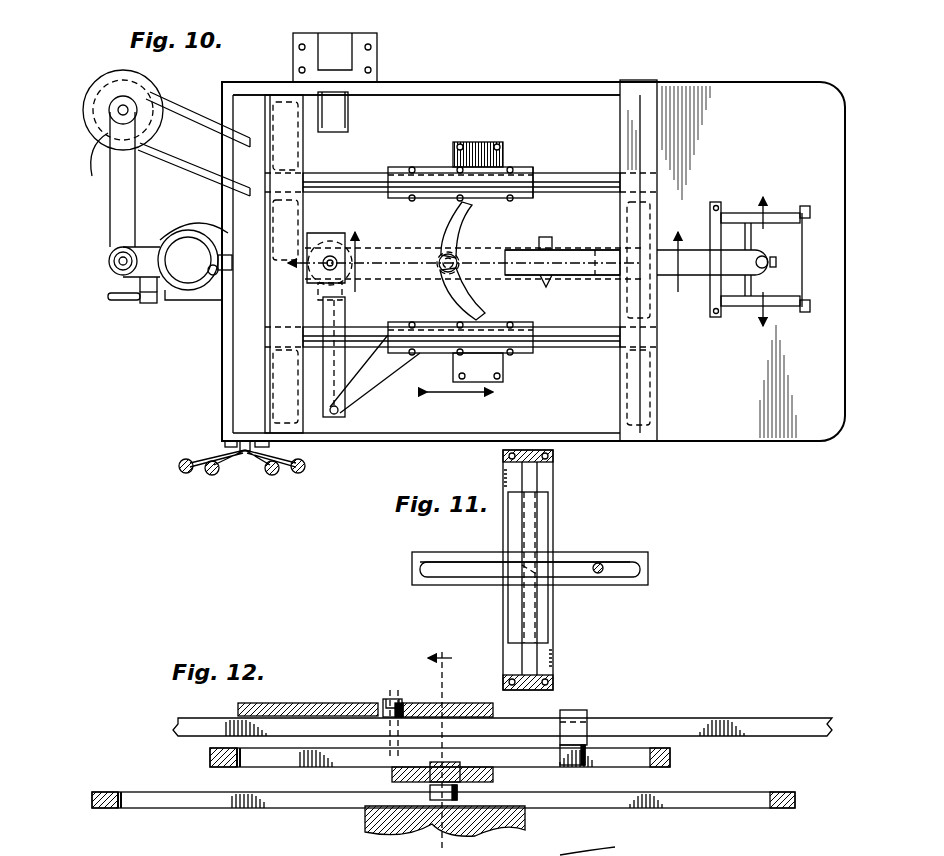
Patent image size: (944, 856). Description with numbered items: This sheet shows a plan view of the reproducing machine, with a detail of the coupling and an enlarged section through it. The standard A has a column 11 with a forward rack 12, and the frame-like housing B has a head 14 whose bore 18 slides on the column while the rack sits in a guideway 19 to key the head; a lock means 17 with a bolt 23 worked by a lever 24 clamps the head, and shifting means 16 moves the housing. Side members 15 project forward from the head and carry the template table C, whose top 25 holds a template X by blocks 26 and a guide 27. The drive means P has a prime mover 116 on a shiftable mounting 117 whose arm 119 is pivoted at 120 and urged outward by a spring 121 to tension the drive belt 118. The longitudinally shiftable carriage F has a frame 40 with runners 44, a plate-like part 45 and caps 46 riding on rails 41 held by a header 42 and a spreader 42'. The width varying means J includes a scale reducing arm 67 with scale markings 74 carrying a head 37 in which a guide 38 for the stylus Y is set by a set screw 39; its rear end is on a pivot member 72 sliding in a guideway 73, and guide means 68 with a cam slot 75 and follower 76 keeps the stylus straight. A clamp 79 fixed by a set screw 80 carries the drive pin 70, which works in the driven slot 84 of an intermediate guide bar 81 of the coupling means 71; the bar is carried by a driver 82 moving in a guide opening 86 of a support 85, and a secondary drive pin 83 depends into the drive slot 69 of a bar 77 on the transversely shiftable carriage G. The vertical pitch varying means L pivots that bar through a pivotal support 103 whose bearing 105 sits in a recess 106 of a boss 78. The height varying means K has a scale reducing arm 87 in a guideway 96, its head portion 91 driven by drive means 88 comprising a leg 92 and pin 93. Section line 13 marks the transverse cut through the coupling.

In FIG. 10, the drive means P is at (96, 80).
In FIG. 10, the prime mover 116 is at (140, 82).
In FIG. 10, the drive belt 118 is at (192, 112).
In FIG. 10, the arm 119 is at (136, 173).
In FIG. 10, the shiftable mounting 117 is at (108, 220).
In FIG. 10, the head 14 is at (198, 223).
In FIG. 10, the bore 18 is at (176, 241).
In FIG. 10, the column 11 is at (168, 262).
In FIG. 10, the rack 12 is at (232, 262).
In FIG. 10, the guideway 19 is at (218, 272).
In FIG. 10, the pivot 120 is at (113, 262).
In FIG. 10, the spring 121 is at (110, 270).
In FIG. 10, the lever 24 is at (107, 296).
In FIG. 10, the lock means 17 is at (138, 306).
In FIG. 10, the bolt 23 is at (148, 304).
In FIG. 10, the standard A is at (190, 291).
In FIG. 10, the frame-like housing B is at (221, 380).
In FIG. 10, the shifting means 16 is at (208, 472).
In FIG. 10, the guideway 96 is at (292, 58).
In FIG. 10, the side members 15 is at (406, 94).
In FIG. 10, the height varying means K is at (350, 108).
In FIG. 10, the header 42 is at (300, 264).
In FIG. 10, the spreader 42' is at (660, 260).
In FIG. 10, the top 25 is at (714, 390).
In FIG. 10, the rails 41 is at (360, 180).
In FIG. 10, the caps 46 is at (396, 172).
In FIG. 12, the caps 46 is at (600, 855).
In FIG. 10, the runners 44 is at (440, 167).
In FIG. 10, the frame 40 is at (483, 165).
In FIG. 12, the frame 40 is at (468, 702).
In FIG. 10, the longitudinally shiftable carriage F is at (531, 165).
In FIG. 10, the plate-like part 45 is at (505, 218).
In FIG. 12, the plate-like part 45 is at (280, 712).
In FIG. 10, the set screw 80 is at (538, 237).
In FIG. 10, the coupling means 71 is at (558, 250).
In FIG. 11, the coupling means 71 is at (588, 552).
In FIG. 12, the coupling means 71 is at (672, 753).
In FIG. 10, the scale reducing arm 67 is at (575, 252).
In FIG. 12, the scale reducing arm 67 is at (730, 718).
In FIG. 10, the template X is at (737, 210).
In FIG. 10, the blocks 26 is at (808, 206).
In FIG. 10, the head 37 is at (752, 228).
In FIG. 10, the guide 38 is at (755, 263).
In FIG. 10, the set screw 39 is at (778, 260).
In FIG. 10, the stylus Y is at (770, 270).
In FIG. 10, the width varying means J is at (680, 276).
In FIG. 12, the width varying means J is at (636, 716).
In FIG. 10, the guide 27 is at (716, 318).
In FIG. 10, the guideway 73 is at (318, 240).
In FIG. 10, the follower 76 is at (438, 265).
In FIG. 12, the follower 76 is at (400, 706).
In FIG. 10, the pivot member 72 is at (345, 298).
In FIG. 10, the scale reducing arm 87 is at (338, 318).
In FIG. 10, the guide means 68 is at (438, 282).
In FIG. 12, the guide means 68 is at (392, 698).
In FIG. 10, the cam slot 75 is at (470, 280).
In FIG. 12, the cam slot 75 is at (383, 704).
In FIG. 10, the scale markings 74 is at (538, 265).
In FIG. 10, the clamp 79 is at (546, 288).
In FIG. 12, the clamp 79 is at (578, 712).
In FIG. 10, the leg 92 is at (396, 372).
In FIG. 10, the drive means 88 is at (362, 406).
In FIG. 10, the head portion 91 is at (338, 414).
In FIG. 10, the pin 93 is at (335, 428).
In FIG. 10, the template table C is at (808, 82).
In FIG. 11, the support 85 is at (506, 476).
In FIG. 12, the support 85 is at (428, 778).
In FIG. 11, the guide opening 86 is at (533, 482).
In FIG. 12, the guide opening 86 is at (434, 770).
In FIG. 11, the intermediate guide bar 81 is at (458, 553).
In FIG. 12, the intermediate guide bar 81 is at (210, 756).
In FIG. 11, the driven slot 84 is at (442, 572).
In FIG. 12, the driven slot 84 is at (258, 760).
In FIG. 11, the secondary drive pin 83 is at (525, 572).
In FIG. 12, the secondary drive pin 83 is at (458, 795).
In FIG. 11, the driver 82 is at (546, 606).
In FIG. 12, the driver 82 is at (495, 775).
In FIG. 11, the drive pin 70 is at (603, 572).
In FIG. 12, the drive pin 70 is at (570, 760).
In FIG. 12, the section line 13- 13 is at (428, 742).
In FIG. 12, the bar 77 is at (782, 792).
In FIG. 12, the drive slot 69 is at (174, 800).
In FIG. 12, the vertical pitch varying means L is at (292, 814).
In FIG. 12, the pivotal support 103 is at (365, 812).
In FIG. 12, the bearing 105 is at (388, 826).
In FIG. 12, the boss 78 is at (462, 826).
In FIG. 12, the recess 106 is at (502, 826).
In FIG. 12, the transversely shiftable carriage G is at (530, 814).